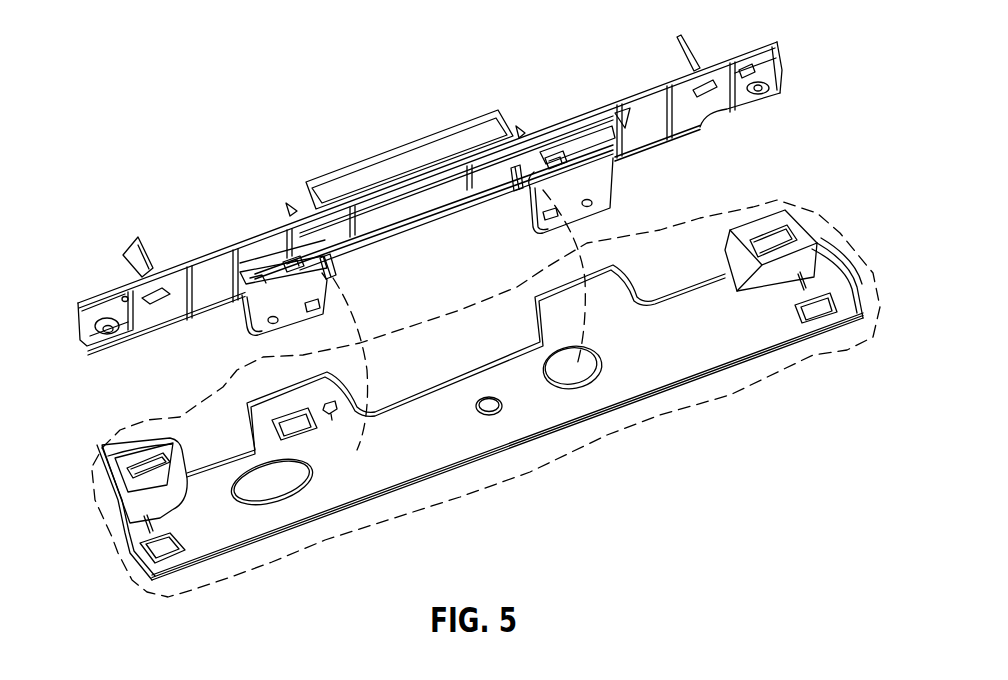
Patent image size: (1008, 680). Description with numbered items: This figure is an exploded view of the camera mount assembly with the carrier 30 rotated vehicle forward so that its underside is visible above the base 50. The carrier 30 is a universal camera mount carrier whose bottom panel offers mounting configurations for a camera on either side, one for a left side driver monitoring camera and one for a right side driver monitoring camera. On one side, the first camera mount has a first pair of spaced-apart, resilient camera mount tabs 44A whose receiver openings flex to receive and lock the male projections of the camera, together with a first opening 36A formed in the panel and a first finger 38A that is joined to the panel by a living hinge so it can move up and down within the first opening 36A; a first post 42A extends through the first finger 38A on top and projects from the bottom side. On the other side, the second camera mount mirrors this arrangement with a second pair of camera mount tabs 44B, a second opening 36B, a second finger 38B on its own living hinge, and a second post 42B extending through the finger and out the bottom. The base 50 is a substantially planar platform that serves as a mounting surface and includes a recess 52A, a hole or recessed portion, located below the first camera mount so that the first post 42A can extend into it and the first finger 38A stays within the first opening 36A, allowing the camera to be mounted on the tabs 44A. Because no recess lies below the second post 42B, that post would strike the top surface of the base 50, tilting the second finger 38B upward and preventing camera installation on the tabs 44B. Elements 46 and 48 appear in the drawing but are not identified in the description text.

The carrier 30 is at (773, 110).
The first opening 36A is at (552, 158).
The second opening 36B is at (290, 253).
The first finger 38A is at (608, 133).
The second finger 38B is at (260, 267).
The first post 42A is at (518, 192).
The second post 42B is at (350, 262).
The first pair of camera mount tabs 44A is at (522, 130).
The second pair of camera mount tabs 44B is at (122, 255).
The mounting bracket 46 is at (103, 337).
The cover 48 is at (403, 140).
The base 50 is at (697, 353).
The recess 52A is at (573, 375).